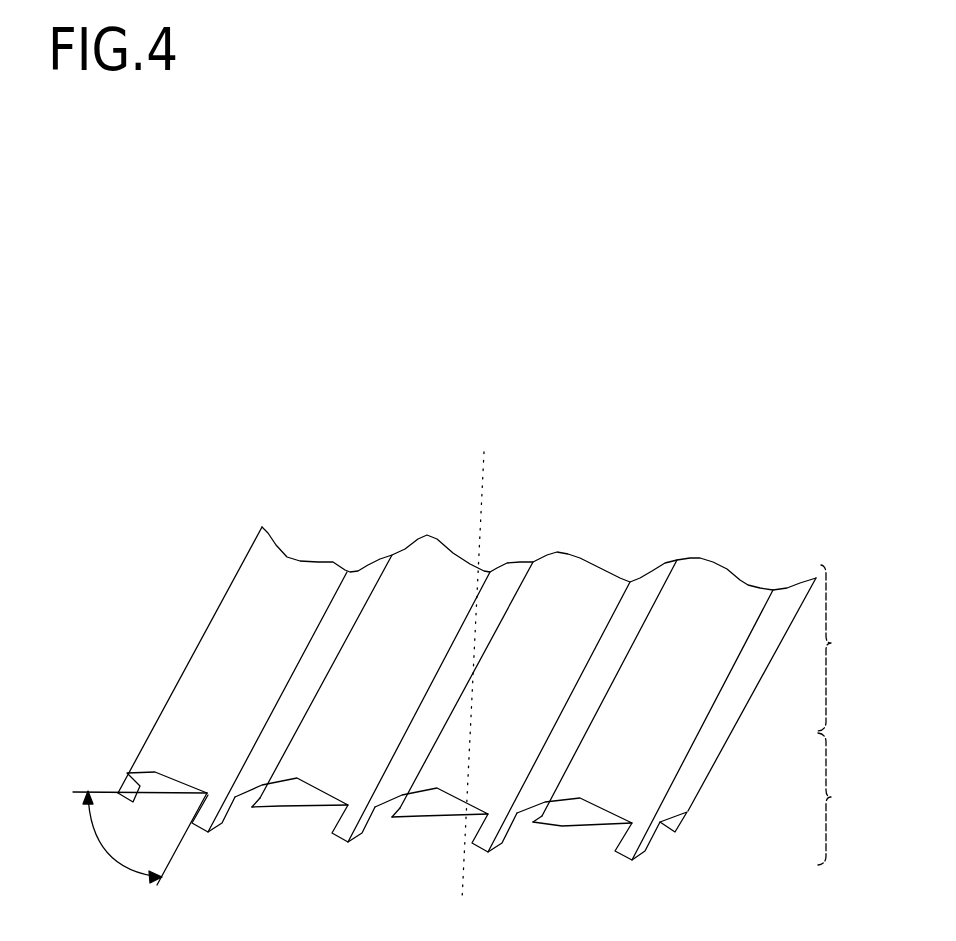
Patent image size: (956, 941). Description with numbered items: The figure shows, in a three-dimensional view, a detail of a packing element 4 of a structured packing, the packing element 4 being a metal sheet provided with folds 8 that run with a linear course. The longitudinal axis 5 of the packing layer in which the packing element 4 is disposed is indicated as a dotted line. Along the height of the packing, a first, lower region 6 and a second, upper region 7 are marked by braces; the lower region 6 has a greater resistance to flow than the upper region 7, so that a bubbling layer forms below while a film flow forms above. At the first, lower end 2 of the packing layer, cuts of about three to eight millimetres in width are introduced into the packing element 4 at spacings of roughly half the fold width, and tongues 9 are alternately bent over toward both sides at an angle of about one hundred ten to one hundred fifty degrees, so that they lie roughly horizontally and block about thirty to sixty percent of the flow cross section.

The first, lower end 2 is at (148, 689).
The packing element 4 is at (575, 588).
The longitudinal axis 5 is at (482, 508).
The first, lower region 6 is at (838, 799).
The second, upper region 7 is at (838, 648).
The folds 8 is at (757, 627).
The tongues 9 is at (300, 803).